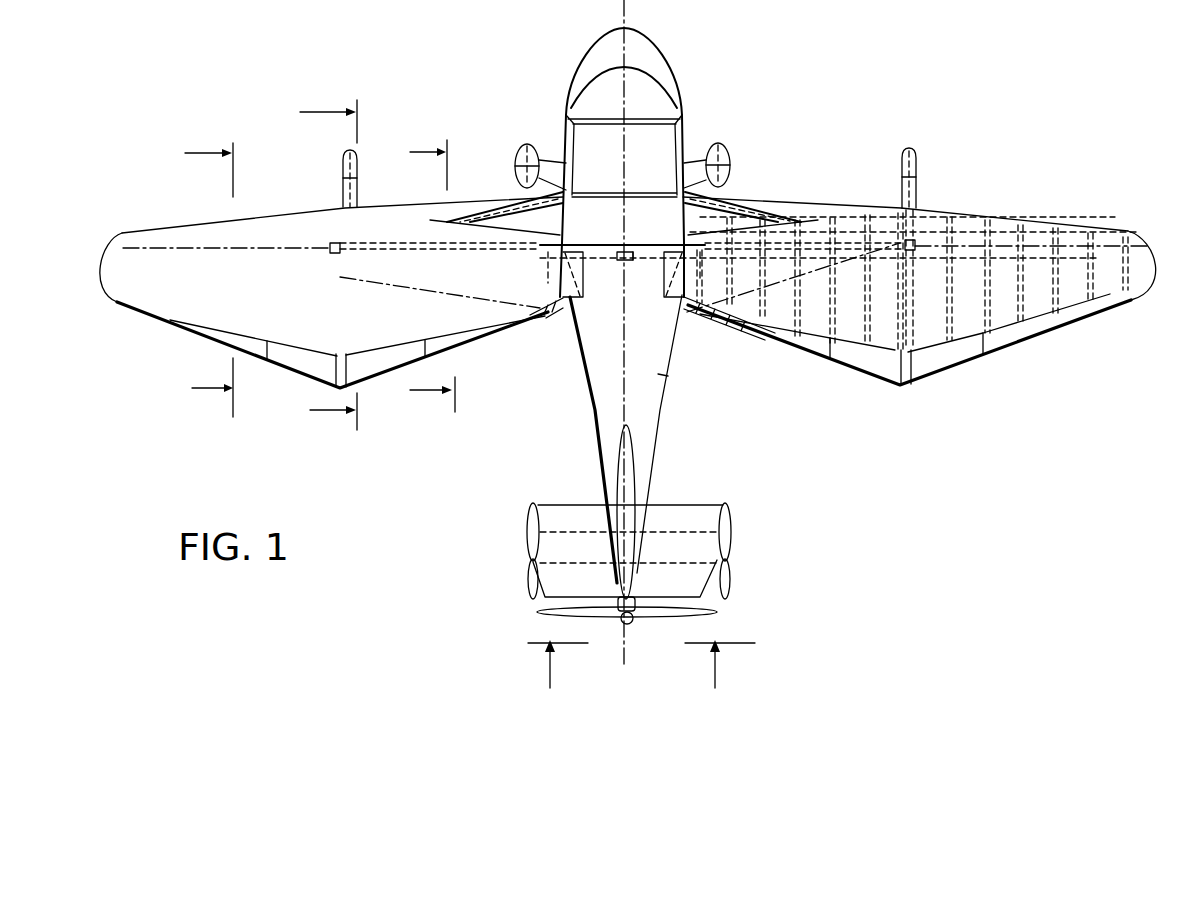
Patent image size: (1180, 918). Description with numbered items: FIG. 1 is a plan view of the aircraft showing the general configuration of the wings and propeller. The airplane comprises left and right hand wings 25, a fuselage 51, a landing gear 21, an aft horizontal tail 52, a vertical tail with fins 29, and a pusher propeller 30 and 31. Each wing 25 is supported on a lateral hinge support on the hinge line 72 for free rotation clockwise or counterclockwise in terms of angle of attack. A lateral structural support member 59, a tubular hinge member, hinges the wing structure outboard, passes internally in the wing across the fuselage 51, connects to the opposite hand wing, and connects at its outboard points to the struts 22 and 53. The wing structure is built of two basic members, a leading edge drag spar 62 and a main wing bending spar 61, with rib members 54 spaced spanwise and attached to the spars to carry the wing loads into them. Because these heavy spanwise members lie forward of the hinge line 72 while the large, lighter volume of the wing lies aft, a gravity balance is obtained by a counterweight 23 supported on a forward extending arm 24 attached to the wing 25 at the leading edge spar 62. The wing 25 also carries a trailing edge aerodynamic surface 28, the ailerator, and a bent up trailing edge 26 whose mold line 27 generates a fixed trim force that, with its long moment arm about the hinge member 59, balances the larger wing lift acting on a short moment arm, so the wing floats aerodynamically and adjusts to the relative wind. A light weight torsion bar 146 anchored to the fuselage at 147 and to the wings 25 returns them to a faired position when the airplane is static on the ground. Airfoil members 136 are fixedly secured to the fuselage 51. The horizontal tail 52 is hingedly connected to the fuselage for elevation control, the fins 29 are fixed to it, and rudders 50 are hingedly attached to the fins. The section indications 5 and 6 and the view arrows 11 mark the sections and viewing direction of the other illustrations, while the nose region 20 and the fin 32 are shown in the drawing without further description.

The section line of FIG. 5 is at (317, 265).
The section line of FIG. 6 is at (308, 278).
The direction of view arrows 11 is at (641, 680).
The fuselage 20 is at (657, 66).
The landing gear 21 is at (733, 152).
The strut 22 is at (770, 212).
The counterweight 23 is at (343, 170).
The forward extending arm 24 is at (343, 196).
The wing 25 is at (127, 291).
The bent up trailing edge 26 is at (207, 337).
The bent up trailing edge mold line 27 is at (165, 320).
The trailing edge aerodynamic surface (ailerator) 28 is at (293, 368).
The vertical tail fin 29 is at (528, 523).
The pusher propeller 30 is at (684, 614).
The pusher propeller 31 is at (621, 622).
The vertical stabilizer 32 is at (618, 448).
The rudder 50 is at (530, 582).
The fuselage 51 is at (658, 374).
The horizontal tail 52 is at (661, 510).
The strut 53 is at (693, 316).
The rib member 54 is at (1100, 300).
The lateral structural support member 59 is at (441, 246).
The main wing bending spar 61 is at (997, 230).
The leading edge drag spar 62 is at (1067, 228).
The hinge line 72 is at (122, 240).
The airfoil member 136 is at (580, 312).
The torsion bar 146 is at (608, 256).
The torsion bar anchor 147 is at (632, 256).